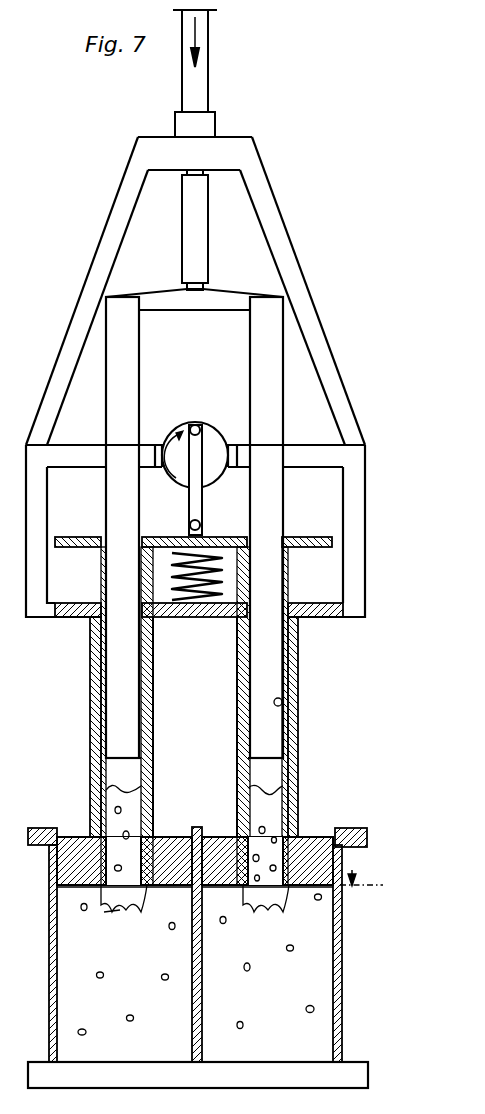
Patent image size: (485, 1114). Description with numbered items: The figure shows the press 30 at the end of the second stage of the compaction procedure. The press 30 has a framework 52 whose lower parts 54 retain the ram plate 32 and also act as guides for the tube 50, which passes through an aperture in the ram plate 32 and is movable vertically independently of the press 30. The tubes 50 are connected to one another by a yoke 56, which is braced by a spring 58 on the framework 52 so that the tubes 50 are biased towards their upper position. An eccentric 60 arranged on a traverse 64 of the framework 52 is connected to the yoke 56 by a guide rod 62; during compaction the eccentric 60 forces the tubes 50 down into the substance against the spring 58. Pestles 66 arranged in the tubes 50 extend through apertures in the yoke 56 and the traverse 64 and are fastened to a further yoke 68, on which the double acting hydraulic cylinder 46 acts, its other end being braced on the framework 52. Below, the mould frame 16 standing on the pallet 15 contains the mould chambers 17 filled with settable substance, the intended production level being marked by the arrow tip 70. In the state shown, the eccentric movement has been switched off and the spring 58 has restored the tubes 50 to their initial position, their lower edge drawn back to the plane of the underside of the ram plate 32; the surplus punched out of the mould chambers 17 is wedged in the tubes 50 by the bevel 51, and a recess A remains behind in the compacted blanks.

The press 30 is at (105, 267).
The double acting hydraulic cylinder 46 is at (202, 248).
The yoke 68 is at (197, 302).
The pestles 66 is at (267, 370).
The eccentric 60 is at (208, 443).
The traverse 64 is at (302, 453).
The guide rod 62 is at (193, 505).
The yoke 56 is at (310, 540).
The framework 52 is at (38, 600).
The spring 58 is at (193, 593).
The lower parts of the framework 54 is at (293, 663).
The tube 50 is at (282, 702).
The ram plate 32 is at (315, 853).
The arrow tip 70 is at (363, 871).
The conical surface 51 is at (140, 887).
The recess A is at (117, 912).
The mould frame 16 is at (337, 945).
The mould chamber 17 is at (312, 993).
The pallet 15 is at (353, 1078).